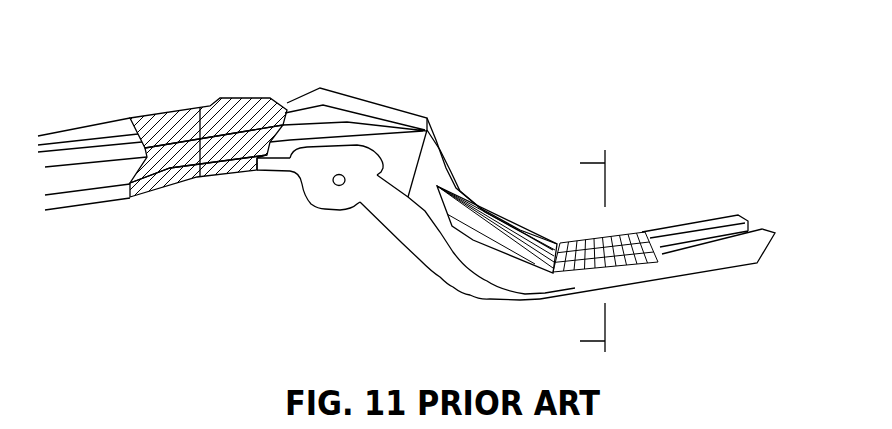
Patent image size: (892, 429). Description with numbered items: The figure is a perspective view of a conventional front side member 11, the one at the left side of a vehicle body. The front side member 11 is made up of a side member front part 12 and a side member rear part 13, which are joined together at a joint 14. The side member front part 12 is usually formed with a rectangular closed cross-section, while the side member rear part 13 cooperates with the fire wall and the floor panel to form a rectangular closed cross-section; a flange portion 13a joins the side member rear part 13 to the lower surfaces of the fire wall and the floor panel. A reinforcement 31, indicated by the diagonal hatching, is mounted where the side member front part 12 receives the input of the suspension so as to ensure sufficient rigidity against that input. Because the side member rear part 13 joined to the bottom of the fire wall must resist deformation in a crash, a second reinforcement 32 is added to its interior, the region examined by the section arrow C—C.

The front side member 11 is at (443, 103).
The side member front part 12 is at (295, 110).
The side member rear part 13 is at (427, 208).
The flange portion 13a is at (447, 151).
The joint 14 is at (412, 160).
The reinforcement 31 is at (208, 118).
The second reinforcement 32 is at (637, 233).